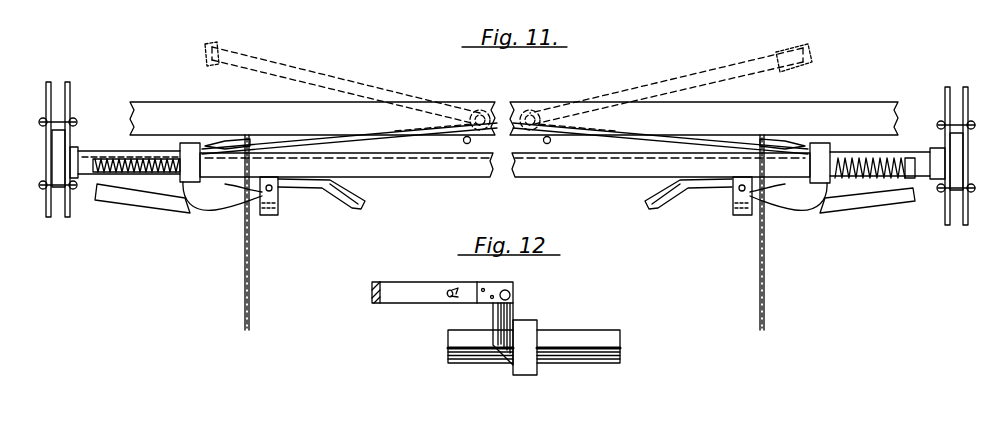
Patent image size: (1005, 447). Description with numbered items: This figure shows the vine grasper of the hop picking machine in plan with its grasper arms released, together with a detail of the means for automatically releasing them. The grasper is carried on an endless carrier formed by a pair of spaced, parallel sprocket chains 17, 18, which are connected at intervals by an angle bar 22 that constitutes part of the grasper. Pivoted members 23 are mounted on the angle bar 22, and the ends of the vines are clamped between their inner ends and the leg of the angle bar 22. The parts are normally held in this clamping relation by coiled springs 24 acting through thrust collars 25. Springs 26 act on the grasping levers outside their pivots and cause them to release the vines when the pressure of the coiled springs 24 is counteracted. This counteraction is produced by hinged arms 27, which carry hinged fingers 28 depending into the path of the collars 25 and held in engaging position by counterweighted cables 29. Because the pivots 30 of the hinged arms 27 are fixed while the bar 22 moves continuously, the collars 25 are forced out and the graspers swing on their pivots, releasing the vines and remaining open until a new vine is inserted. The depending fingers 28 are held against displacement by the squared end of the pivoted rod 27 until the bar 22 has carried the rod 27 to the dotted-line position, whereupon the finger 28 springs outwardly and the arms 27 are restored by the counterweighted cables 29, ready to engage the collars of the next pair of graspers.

In FIG. 11, the sprocket chain 17 is at (45, 160).
In FIG. 11, the sprocket chain 18 is at (970, 160).
In FIG. 11, the angle bar 22 is at (430, 172).
In FIG. 12, the angle bar 22 is at (612, 336).
In FIG. 11, the pivoted member 23 is at (315, 196).
In FIG. 11, the coiled spring 24 is at (143, 186).
In FIG. 11, the thrust collar 25 is at (190, 182).
In FIG. 12, the thrust collar 25 is at (538, 330).
In FIG. 11, the spring 26 is at (238, 192).
In FIG. 11, the hinged arm 27 is at (356, 87).
In FIG. 12, the hinged arm 27 is at (398, 282).
In FIG. 11, the hinged finger 28 is at (210, 51).
In FIG. 12, the hinged finger 28 is at (518, 310).
In FIG. 11, the counterweighted cable 29 is at (244, 265).
In FIG. 12, the counterweighted cable 29 is at (447, 302).
In FIG. 11, the pivot 30 is at (516, 101).